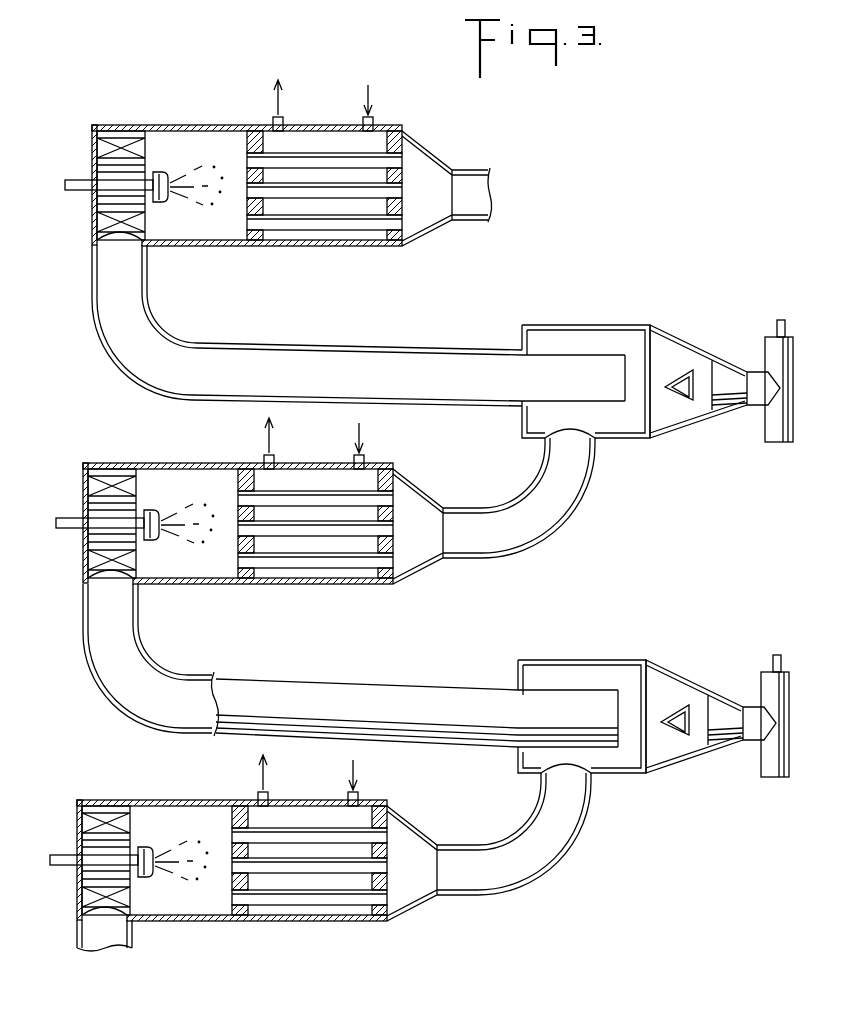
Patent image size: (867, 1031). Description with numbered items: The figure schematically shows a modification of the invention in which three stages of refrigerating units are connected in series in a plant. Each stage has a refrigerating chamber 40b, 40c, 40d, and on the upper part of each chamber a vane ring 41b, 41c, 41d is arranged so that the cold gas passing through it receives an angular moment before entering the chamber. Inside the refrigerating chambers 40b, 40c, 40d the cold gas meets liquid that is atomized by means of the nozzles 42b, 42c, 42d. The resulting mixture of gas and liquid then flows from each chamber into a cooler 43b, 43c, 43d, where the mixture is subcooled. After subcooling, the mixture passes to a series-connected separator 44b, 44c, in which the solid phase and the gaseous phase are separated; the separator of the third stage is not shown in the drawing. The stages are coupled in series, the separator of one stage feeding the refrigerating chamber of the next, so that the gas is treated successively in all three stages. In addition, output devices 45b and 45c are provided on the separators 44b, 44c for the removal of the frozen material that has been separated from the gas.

The refrigerating chamber 40d is at (176, 237).
The vane ring 41d is at (118, 150).
The nozzle 42d is at (161, 174).
The cooler 43d is at (316, 240).
The refrigerating chamber 40c is at (281, 513).
The vane ring 41c is at (106, 505).
The nozzle 42c is at (135, 508).
The cooler 43c is at (315, 542).
The separator 44c is at (672, 420).
The output device 45c is at (778, 370).
The refrigerating chamber 40b is at (275, 853).
The vane ring 41b is at (101, 842).
The nozzle 42b is at (129, 843).
The cooler 43b is at (309, 878).
The separator 44b is at (668, 755).
The output device 45b is at (774, 705).